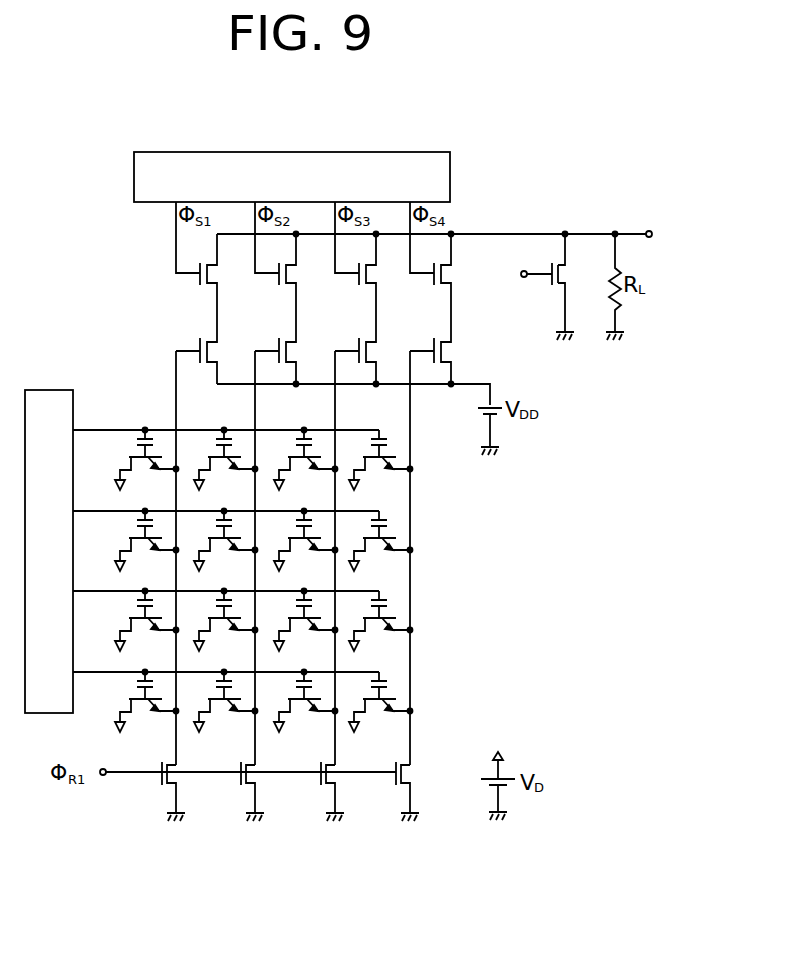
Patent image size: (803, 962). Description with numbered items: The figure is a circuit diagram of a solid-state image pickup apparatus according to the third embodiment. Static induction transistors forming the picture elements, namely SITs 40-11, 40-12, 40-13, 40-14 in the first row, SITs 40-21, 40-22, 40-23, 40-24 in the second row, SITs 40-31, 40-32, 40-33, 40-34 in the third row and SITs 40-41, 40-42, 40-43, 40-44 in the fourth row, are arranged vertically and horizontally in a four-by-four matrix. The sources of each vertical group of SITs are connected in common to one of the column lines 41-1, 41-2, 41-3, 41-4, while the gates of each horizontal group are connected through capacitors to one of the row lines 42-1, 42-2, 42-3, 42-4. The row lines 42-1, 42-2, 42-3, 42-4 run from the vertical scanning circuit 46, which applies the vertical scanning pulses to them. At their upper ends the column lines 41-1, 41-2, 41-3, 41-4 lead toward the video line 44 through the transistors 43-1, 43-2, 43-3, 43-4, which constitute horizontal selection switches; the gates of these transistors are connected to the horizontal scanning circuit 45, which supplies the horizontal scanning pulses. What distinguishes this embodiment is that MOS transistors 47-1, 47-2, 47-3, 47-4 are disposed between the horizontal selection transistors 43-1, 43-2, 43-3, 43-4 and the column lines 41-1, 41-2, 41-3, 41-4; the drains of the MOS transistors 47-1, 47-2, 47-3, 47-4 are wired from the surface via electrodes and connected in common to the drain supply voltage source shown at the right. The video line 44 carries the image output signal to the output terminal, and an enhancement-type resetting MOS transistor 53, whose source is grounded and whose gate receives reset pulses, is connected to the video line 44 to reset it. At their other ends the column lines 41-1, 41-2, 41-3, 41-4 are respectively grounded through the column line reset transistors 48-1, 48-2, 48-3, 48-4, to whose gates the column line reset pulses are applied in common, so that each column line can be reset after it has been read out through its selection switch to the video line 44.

The horizontal scanning circuit 45 is at (452, 178).
The vertical scanning circuit 46 is at (56, 388).
The video line 44 is at (501, 232).
The resetting MOS transistor 53 is at (555, 289).
The horizontal selection transistor 43-1 is at (225, 272).
The horizontal selection transistor 43-2 is at (304, 272).
The horizontal selection transistor 43-3 is at (384, 272).
The horizontal selection transistor 43-4 is at (459, 272).
The MOS transistor 47-1 is at (217, 351).
The MOS transistor 47-2 is at (296, 351).
The MOS transistor 47-3 is at (376, 351).
The MOS transistor 47-4 is at (451, 351).
The column line 41-1 is at (178, 410).
The column line 41-2 is at (257, 410).
The column line 41-3 is at (337, 410).
The column line 41-4 is at (412, 410).
The row line 42-1 is at (117, 667).
The row line 42-2 is at (117, 586).
The row line 42-3 is at (117, 507).
The row line 42-4 is at (123, 428).
The SIT 40-11 is at (147, 715).
The SIT 40-12 is at (226, 715).
The SIT 40-13 is at (306, 715).
The SIT 40-14 is at (381, 716).
The SIT 40-21 is at (147, 629).
The SIT 40-22 is at (226, 629).
The SIT 40-23 is at (306, 629).
The SIT 40-24 is at (381, 630).
The SIT 40-31 is at (147, 549).
The SIT 40-32 is at (226, 549).
The SIT 40-33 is at (306, 549).
The SIT 40-34 is at (381, 550).
The SIT 40-41 is at (147, 468).
The SIT 40-42 is at (226, 468).
The SIT 40-43 is at (306, 468).
The SIT 40-44 is at (381, 469).
The column line reset transistor 48-1 is at (164, 794).
The column line reset transistor 48-2 is at (243, 794).
The column line reset transistor 48-3 is at (323, 794).
The column line reset transistor 48-4 is at (398, 794).